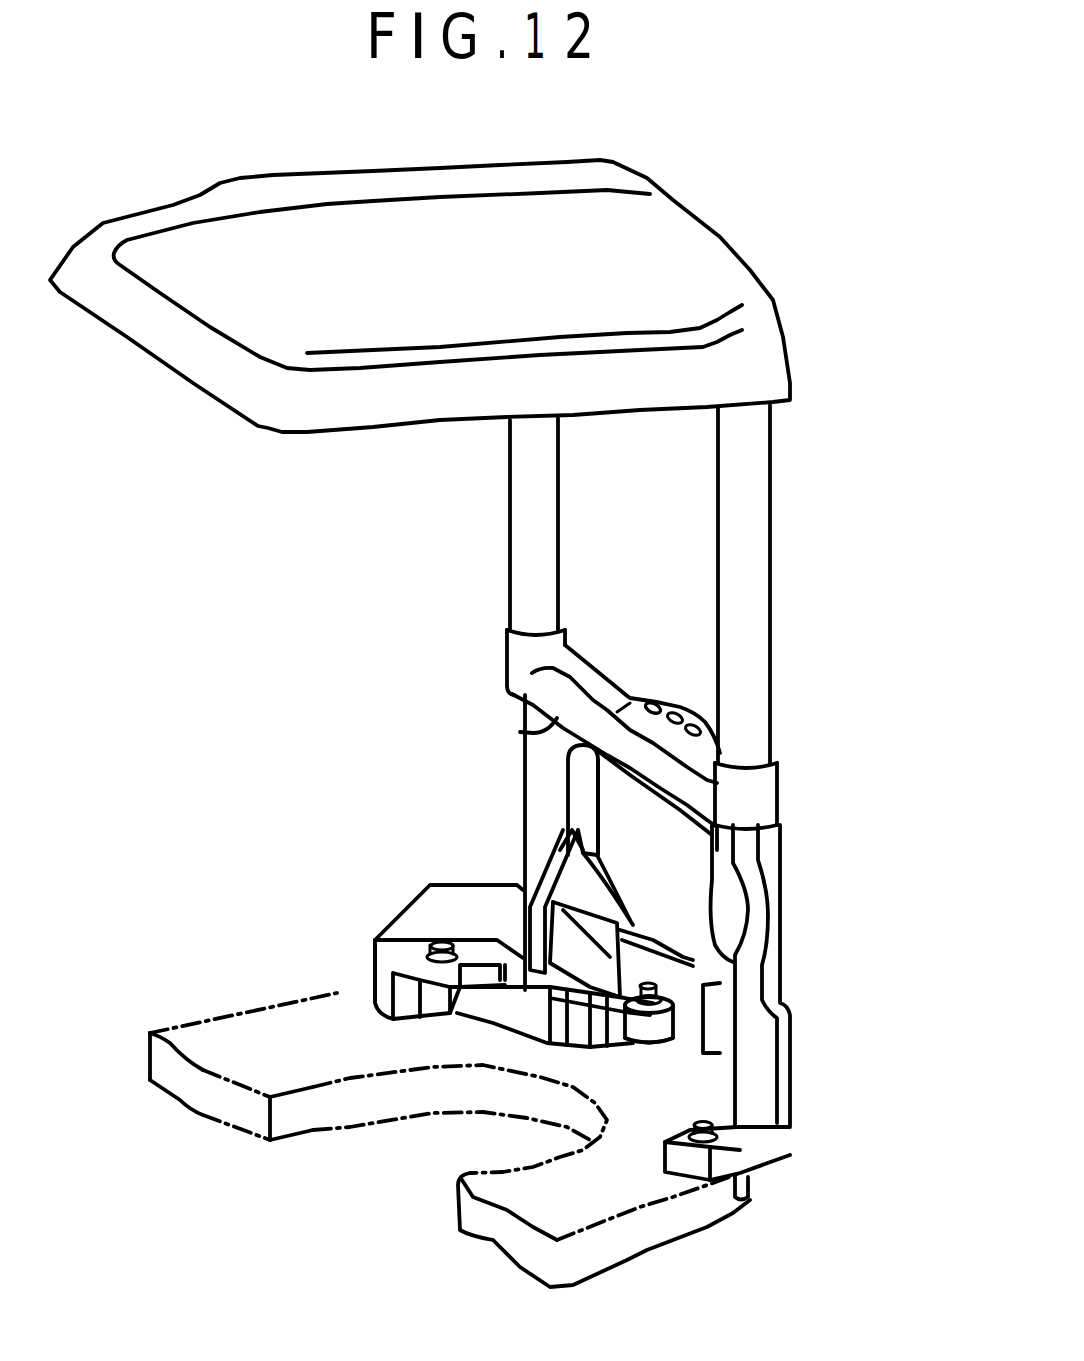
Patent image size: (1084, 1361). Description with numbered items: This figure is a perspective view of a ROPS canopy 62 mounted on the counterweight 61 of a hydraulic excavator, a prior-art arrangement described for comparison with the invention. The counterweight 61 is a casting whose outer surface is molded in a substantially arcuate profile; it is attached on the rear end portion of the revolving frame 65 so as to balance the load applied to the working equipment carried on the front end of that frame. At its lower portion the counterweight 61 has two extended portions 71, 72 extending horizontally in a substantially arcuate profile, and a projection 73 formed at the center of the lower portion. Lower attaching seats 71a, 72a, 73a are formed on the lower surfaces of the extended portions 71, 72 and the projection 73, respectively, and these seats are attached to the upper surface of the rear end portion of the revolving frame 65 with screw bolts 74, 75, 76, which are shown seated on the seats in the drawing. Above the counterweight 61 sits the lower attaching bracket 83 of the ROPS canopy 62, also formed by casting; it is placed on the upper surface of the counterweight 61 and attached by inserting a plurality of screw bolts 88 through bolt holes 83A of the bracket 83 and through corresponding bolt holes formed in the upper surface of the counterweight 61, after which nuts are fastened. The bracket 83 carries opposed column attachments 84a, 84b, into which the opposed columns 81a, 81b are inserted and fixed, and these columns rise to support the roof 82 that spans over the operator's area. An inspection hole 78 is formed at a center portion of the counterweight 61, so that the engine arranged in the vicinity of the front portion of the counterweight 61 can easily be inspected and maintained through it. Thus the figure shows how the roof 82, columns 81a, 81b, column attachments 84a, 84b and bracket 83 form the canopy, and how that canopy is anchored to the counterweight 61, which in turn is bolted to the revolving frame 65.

The roof 82 is at (720, 240).
The ROPS canopy 62 is at (793, 463).
The column 81a is at (770, 527).
The column 81b is at (510, 520).
The column attachment 84a is at (760, 793).
The column attachment 84b is at (520, 652).
The lower attaching bracket 83 is at (525, 722).
The bolt holes 83A is at (687, 705).
The screw bolts 88 is at (687, 705).
The inspection hole 78 is at (633, 827).
The counterweight 61 is at (797, 910).
The extended portion 71 is at (748, 1158).
The lower attaching seat 71a is at (740, 1200).
The screw bolt 74 is at (740, 1140).
The extended portion 72 is at (490, 990).
The lower attaching seat 72a is at (373, 990).
The screw bolt 75 is at (435, 940).
The projection 73 is at (640, 1045).
The lower attaching seat 73a is at (660, 1042).
The screw bolt 76 is at (660, 977).
The revolving frame 65 is at (670, 1245).